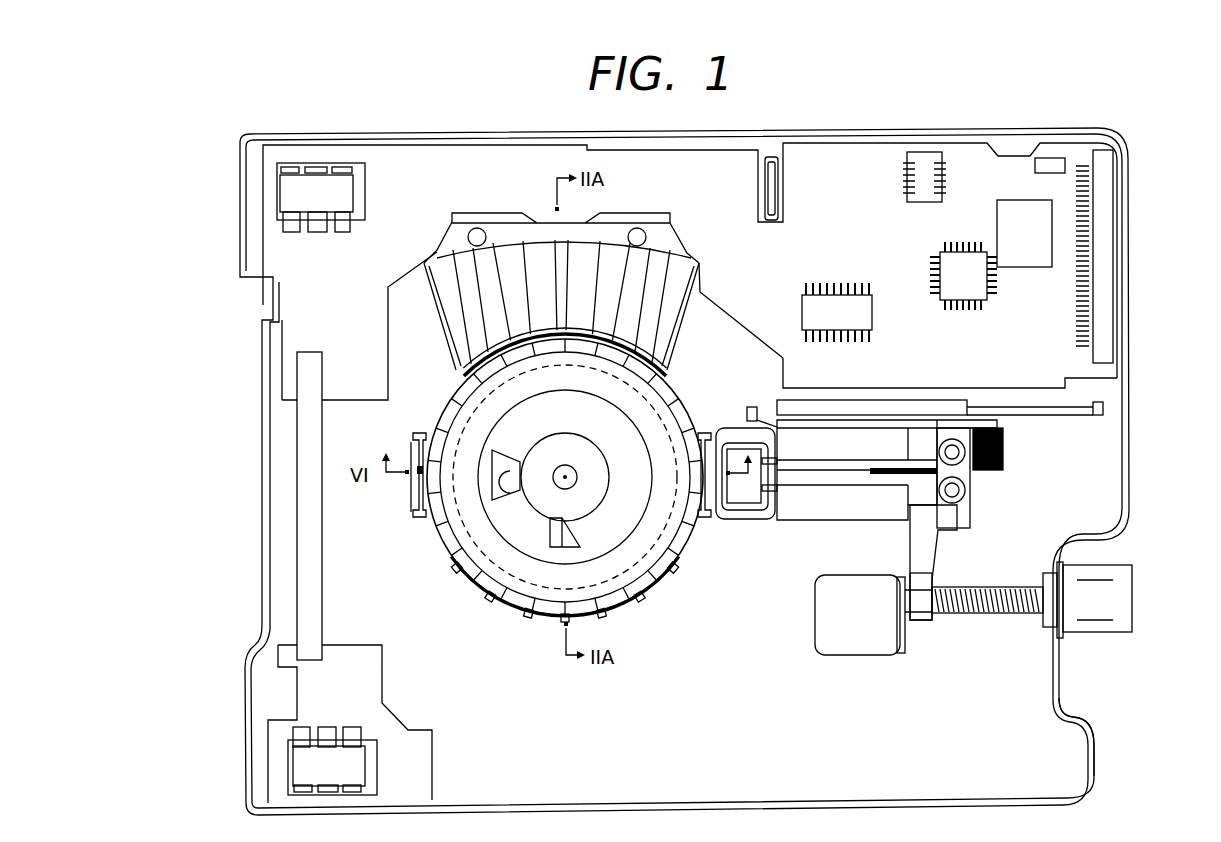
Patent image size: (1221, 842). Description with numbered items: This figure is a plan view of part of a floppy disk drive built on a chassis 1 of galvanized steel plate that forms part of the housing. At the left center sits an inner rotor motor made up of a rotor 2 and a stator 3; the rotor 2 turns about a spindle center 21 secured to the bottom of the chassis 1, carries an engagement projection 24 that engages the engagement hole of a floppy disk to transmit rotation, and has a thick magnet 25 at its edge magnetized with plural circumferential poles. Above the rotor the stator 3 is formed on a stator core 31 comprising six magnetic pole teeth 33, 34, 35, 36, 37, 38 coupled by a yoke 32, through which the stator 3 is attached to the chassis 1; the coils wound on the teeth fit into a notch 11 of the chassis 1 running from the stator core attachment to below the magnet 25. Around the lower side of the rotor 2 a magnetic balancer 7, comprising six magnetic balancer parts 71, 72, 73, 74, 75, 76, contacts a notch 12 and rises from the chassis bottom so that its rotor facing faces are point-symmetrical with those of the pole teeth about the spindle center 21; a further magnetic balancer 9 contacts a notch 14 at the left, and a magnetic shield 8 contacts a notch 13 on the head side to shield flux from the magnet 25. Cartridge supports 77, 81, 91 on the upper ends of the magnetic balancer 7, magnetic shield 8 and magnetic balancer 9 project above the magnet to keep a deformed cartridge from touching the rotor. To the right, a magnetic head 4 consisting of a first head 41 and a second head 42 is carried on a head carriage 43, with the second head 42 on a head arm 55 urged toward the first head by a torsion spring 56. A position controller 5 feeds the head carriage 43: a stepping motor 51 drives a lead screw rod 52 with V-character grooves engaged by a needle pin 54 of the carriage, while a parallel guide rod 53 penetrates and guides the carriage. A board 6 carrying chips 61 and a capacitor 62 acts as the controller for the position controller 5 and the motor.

The chassis 1 is at (1130, 480).
The rotor 2 is at (425, 544).
The stator 3 is at (426, 333).
The magnetic head 4 is at (740, 546).
The position controller 5 is at (1092, 674).
The board 6 is at (1005, 168).
The magnetic balancer 7 is at (560, 678).
The magnetic shield 8 is at (708, 546).
The magnetic balancer 9 is at (410, 512).
The notch 11 is at (447, 397).
The notch 12 is at (455, 580).
The notch 13 is at (694, 408).
The notch 14 is at (432, 424).
The spindle center 21 is at (567, 475).
The engagement projection 24 is at (512, 458).
The magnet 25 is at (672, 392).
The stator core 31 is at (438, 253).
The yoke 32 is at (672, 243).
The magnetic pole tooth 33 is at (690, 300).
The magnetic pole tooth 34 is at (620, 258).
The magnetic pole tooth 35 is at (580, 255).
The magnetic pole tooth 36 is at (543, 250).
The magnetic pole tooth 37 is at (497, 262).
The magnetic pole tooth 38 is at (457, 282).
The first head 41 is at (775, 505).
The second head 42 is at (770, 495).
The head carriage 43 is at (838, 512).
The stepping motor 51 is at (1133, 565).
The lead screw rod 52 is at (985, 614).
The guide rod 53 is at (1073, 416).
The needle pin 54 is at (942, 560).
The head arm 55 is at (858, 480).
The torsion spring 56 is at (1008, 458).
The chips 61 is at (866, 322).
The capacitor 62 is at (1040, 265).
The magnetic balancer part 71 is at (462, 588).
The magnetic balancer part 72 is at (496, 610).
The magnetic balancer part 73 is at (526, 620).
The magnetic balancer part 74 is at (601, 621).
The magnetic balancer part 75 is at (635, 604).
The magnetic balancer part 76 is at (662, 580).
The cartridge support 77 is at (552, 626).
The cartridge support 81 is at (735, 420).
The cartridge support 91 is at (412, 472).